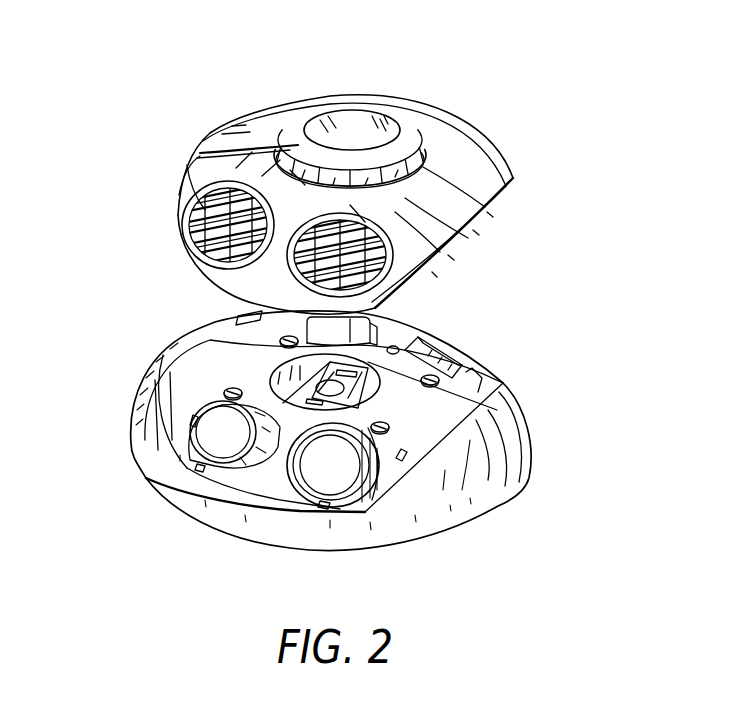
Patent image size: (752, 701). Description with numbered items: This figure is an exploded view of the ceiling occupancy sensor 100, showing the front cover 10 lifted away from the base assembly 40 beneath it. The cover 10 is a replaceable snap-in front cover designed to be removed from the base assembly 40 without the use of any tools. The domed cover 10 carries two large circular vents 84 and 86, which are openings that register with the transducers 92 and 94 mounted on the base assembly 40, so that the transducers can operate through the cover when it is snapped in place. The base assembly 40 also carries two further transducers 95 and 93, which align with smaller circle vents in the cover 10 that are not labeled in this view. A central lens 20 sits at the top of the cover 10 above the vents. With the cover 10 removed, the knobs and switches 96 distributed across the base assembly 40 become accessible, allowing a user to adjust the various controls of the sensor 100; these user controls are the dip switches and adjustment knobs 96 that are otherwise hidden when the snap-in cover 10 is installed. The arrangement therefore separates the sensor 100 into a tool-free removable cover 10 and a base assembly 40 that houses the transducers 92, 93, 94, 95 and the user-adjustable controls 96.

The occupancy sensor 100 is at (132, 62).
The cover 10 is at (283, 110).
The central lens / indicator collar 20 is at (403, 118).
The circular vent 84 is at (193, 227).
The circular vent 86 is at (395, 298).
The base assembly 40 is at (528, 416).
The transducer 92 is at (193, 472).
The transducer 93 is at (372, 328).
The transducer 94 is at (323, 480).
The transducer 95 is at (468, 362).
The knobs and switches 96 is at (288, 338).